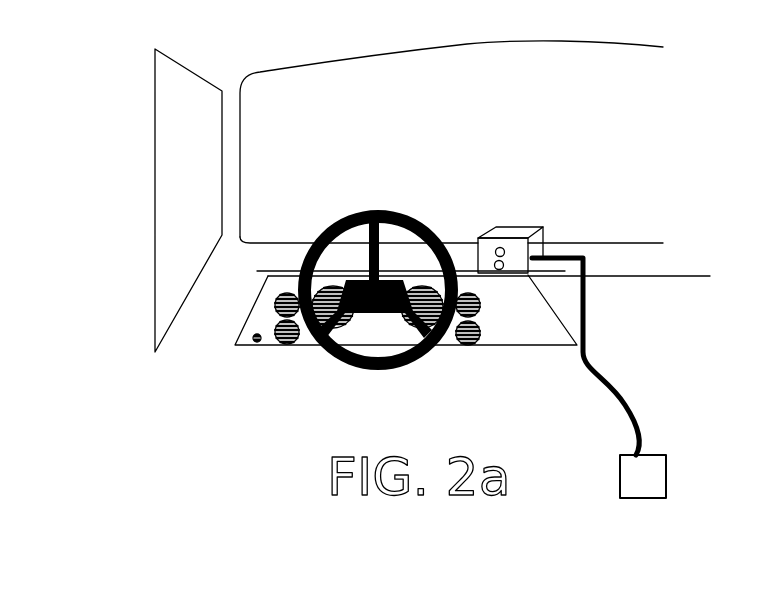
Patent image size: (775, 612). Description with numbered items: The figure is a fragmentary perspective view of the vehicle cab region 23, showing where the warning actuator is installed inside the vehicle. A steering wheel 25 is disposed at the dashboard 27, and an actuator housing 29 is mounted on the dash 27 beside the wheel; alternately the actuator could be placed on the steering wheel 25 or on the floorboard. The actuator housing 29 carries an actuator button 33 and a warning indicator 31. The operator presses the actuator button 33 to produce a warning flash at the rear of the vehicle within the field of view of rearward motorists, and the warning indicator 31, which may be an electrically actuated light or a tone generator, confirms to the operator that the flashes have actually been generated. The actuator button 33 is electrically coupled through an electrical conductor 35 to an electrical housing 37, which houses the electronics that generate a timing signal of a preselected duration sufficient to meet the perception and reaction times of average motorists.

The cab region 23 is at (644, 232).
The steering wheel 25 is at (413, 358).
The dashboard 27 is at (392, 198).
The actuator housing 29 is at (543, 228).
The warning indicator 31 is at (503, 249).
The actuator button 33 is at (503, 262).
The electrical conductor 35 is at (600, 367).
The electrical housing 37 is at (670, 467).